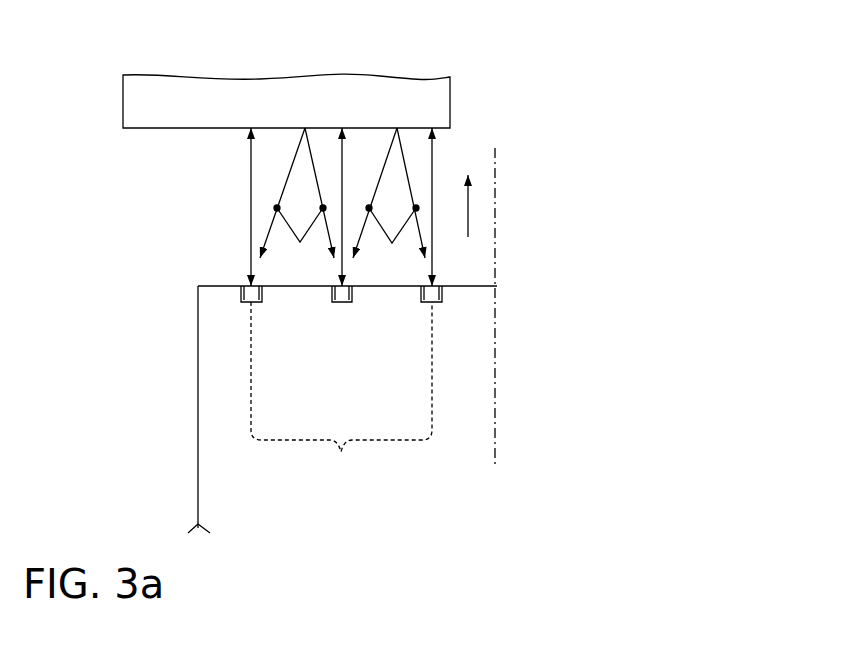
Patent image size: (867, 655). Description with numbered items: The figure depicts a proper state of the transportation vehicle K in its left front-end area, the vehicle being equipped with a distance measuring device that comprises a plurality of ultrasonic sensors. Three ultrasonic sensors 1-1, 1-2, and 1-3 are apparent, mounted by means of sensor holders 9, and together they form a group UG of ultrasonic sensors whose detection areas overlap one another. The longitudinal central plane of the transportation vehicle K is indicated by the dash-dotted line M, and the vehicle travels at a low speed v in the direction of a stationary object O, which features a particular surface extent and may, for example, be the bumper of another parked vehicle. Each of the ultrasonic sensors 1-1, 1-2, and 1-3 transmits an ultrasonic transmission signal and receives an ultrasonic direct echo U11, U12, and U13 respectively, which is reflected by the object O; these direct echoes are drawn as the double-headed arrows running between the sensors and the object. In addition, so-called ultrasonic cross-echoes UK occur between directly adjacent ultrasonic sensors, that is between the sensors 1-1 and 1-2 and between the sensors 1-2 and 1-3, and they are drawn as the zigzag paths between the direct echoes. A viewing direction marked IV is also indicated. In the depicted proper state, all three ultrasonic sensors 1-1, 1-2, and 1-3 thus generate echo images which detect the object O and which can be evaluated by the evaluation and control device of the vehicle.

The stationary object O is at (123, 112).
The viewing direction IV is at (207, 237).
The ultrasonic direct echo U11 is at (251, 235).
The ultrasonic direct echo U12 is at (342, 183).
The ultrasonic direct echo U13 is at (432, 183).
The ultrasonic cross-echoes UK is at (342, 201).
The longitudinal central plane M is at (495, 163).
The low speed v is at (468, 212).
The sensor holders 9 is at (238, 295).
The ultrasonic sensor 1-1 is at (251, 300).
The ultrasonic sensor 1-2 is at (341, 301).
The ultrasonic sensor 1-3 is at (431, 301).
The group of ultrasonic sensors UG is at (341, 393).
The transportation vehicle K is at (198, 494).